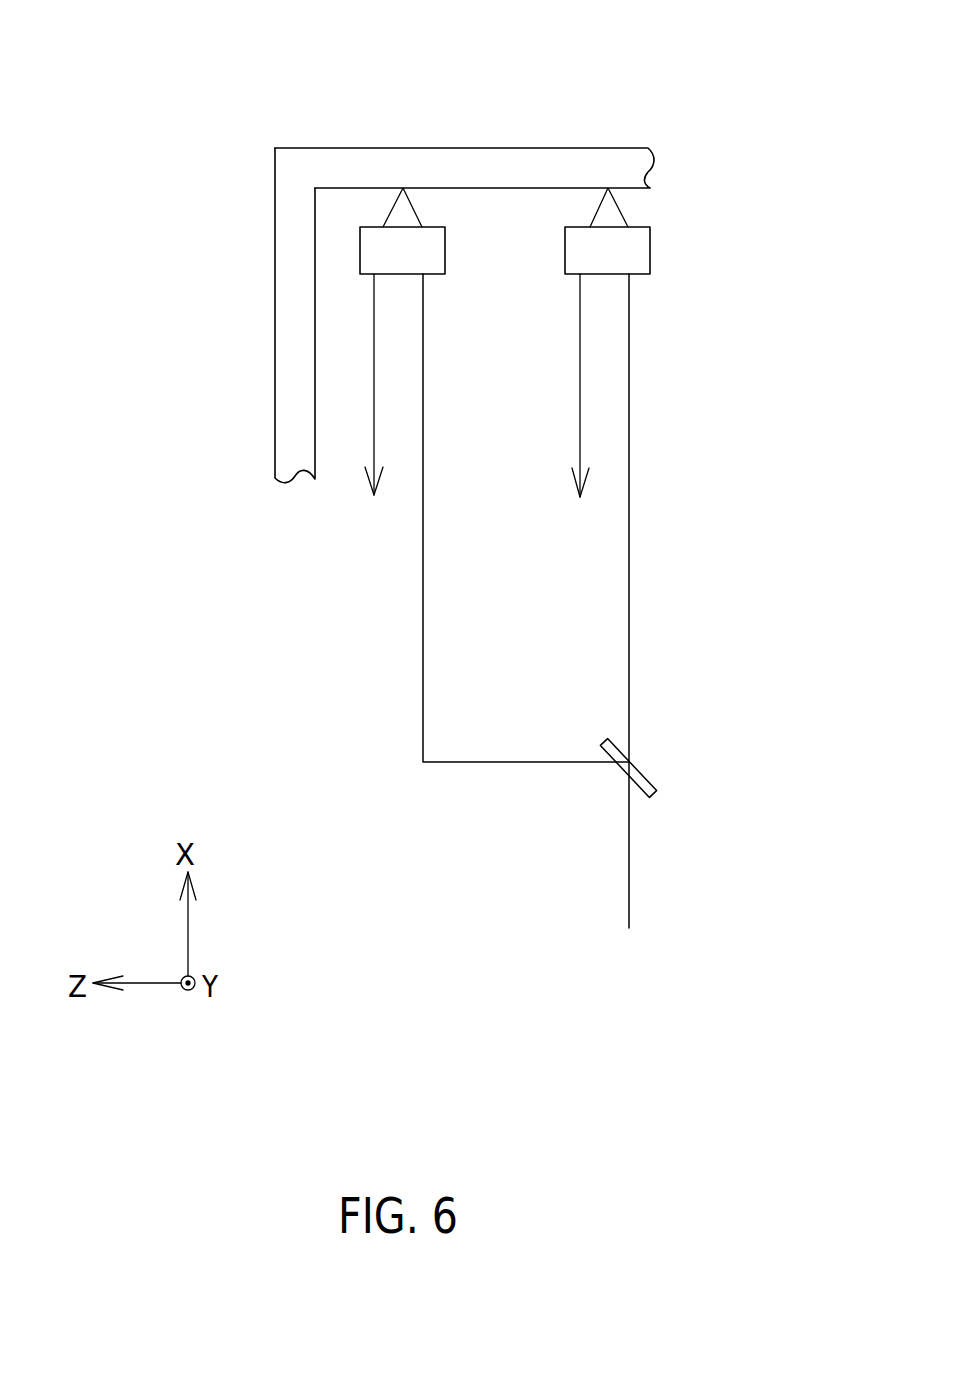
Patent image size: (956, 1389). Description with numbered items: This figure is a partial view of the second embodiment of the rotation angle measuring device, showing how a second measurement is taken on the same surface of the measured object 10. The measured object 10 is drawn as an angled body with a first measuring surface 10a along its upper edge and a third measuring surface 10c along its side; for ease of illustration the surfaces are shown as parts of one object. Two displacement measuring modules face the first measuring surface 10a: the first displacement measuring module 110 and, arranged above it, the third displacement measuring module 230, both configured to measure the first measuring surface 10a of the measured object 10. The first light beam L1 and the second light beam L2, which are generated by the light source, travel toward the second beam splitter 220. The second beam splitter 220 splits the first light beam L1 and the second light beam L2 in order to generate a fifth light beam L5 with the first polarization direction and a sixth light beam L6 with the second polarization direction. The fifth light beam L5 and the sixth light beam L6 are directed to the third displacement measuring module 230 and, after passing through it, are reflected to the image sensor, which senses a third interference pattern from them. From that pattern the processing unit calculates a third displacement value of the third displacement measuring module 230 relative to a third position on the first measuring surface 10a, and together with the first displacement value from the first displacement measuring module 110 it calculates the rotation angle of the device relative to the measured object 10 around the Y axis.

The measured object 10 is at (369, 117).
The first measuring surface 10a is at (500, 187).
The third measuring surface 10c is at (314, 275).
The first displacement measuring module 110 is at (630, 266).
The third displacement measuring module 230 is at (425, 266).
The second beam splitter 220 is at (648, 780).
The first light beam L1 is at (689, 601).
The second light beam L2 is at (629, 579).
The fifth light beam L5 is at (443, 518).
The sixth light beam L6 is at (423, 631).